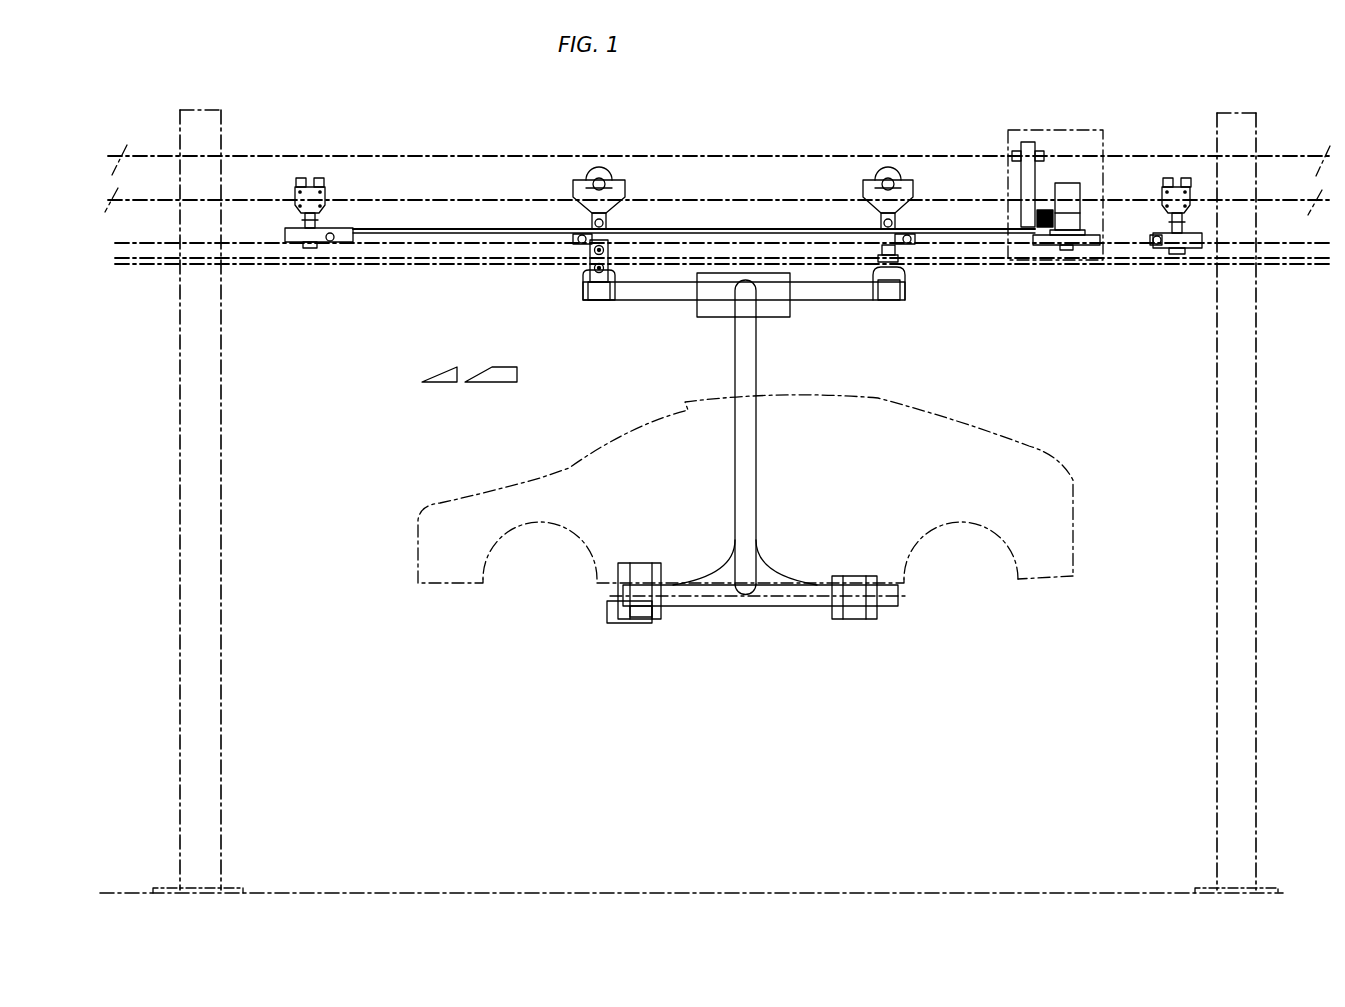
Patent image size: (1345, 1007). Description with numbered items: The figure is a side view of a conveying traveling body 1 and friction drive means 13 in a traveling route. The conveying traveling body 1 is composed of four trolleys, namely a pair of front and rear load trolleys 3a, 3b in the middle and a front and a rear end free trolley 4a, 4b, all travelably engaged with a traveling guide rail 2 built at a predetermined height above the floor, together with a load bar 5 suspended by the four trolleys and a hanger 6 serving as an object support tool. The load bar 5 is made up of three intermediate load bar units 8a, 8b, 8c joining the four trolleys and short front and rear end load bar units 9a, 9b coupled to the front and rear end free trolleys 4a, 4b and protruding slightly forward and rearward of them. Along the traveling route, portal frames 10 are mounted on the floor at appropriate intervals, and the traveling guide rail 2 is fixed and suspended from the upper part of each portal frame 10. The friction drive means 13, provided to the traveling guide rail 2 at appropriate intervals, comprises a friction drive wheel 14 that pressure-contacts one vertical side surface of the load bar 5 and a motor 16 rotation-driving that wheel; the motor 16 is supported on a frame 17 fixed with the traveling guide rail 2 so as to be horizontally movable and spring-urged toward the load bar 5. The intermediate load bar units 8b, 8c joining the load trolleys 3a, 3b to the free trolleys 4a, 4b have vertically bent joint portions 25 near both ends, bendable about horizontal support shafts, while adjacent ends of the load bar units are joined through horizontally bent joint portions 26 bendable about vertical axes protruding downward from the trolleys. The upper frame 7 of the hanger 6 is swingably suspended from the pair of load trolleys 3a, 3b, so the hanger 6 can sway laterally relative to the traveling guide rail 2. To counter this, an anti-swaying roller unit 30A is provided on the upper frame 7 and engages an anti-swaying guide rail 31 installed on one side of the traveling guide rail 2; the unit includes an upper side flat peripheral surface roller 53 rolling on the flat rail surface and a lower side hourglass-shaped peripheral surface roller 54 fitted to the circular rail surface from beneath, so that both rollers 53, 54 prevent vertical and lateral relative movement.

The conveying traveling body 1 is at (900, 172).
The traveling guide rail 2 is at (147, 172).
The front load trolley 3a is at (606, 196).
The rear load trolley 3b is at (882, 196).
The front end free trolley 4a is at (310, 178).
The rear end free trolley 4b is at (1176, 178).
The load bar 5 is at (729, 228).
The hanger 6 is at (740, 606).
The upper frame 7 is at (826, 292).
The intermediate load bar unit 8a is at (680, 240).
The intermediate load bar unit 8b is at (385, 240).
The intermediate load bar unit 8c is at (985, 246).
The front end load bar unit 9a is at (296, 236).
The rear end load bar unit 9b is at (1200, 241).
The portal frame 10 is at (205, 455).
The friction drive means 13 is at (1077, 132).
The friction drive wheel 14 is at (1055, 246).
The motor 16 is at (1067, 200).
The frame 17 is at (1028, 182).
The vertically bent joint portion 25 is at (336, 236).
The horizontally bent joint portion 26 is at (302, 240).
The anti-swaying roller unit 30A is at (599, 292).
The anti-swaying guide rail 31 is at (150, 264).
The upper side flat peripheral surface roller 53 is at (594, 250).
The lower side hourglass-shaped peripheral surface roller 54 is at (595, 270).